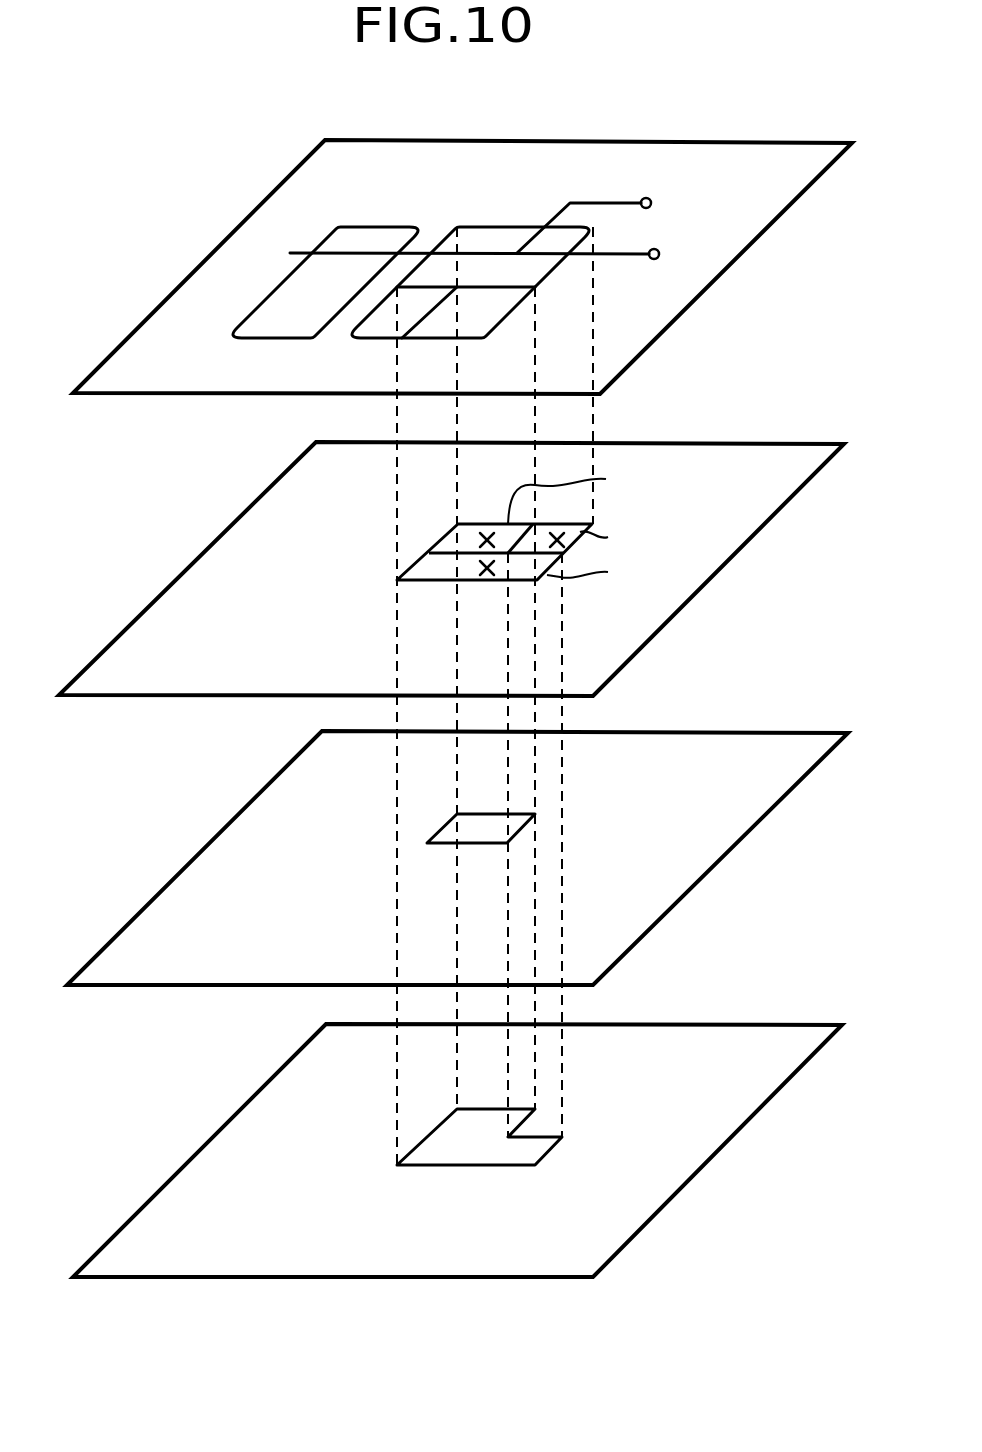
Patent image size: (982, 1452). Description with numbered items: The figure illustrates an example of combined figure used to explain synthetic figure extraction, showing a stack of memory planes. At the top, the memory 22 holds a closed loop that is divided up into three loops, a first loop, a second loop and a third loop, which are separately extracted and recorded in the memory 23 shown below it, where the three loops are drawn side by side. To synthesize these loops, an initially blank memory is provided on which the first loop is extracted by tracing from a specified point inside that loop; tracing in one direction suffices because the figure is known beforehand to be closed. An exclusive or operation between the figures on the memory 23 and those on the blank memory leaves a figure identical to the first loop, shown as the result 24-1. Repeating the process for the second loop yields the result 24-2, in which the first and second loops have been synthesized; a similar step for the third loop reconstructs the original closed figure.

The memory 22 is at (710, 285).
The memory 23 is at (731, 563).
The memory 24 result after first synthesis 24-1 is at (733, 845).
The memory 24 result after second synthesis 24-2 is at (732, 1137).